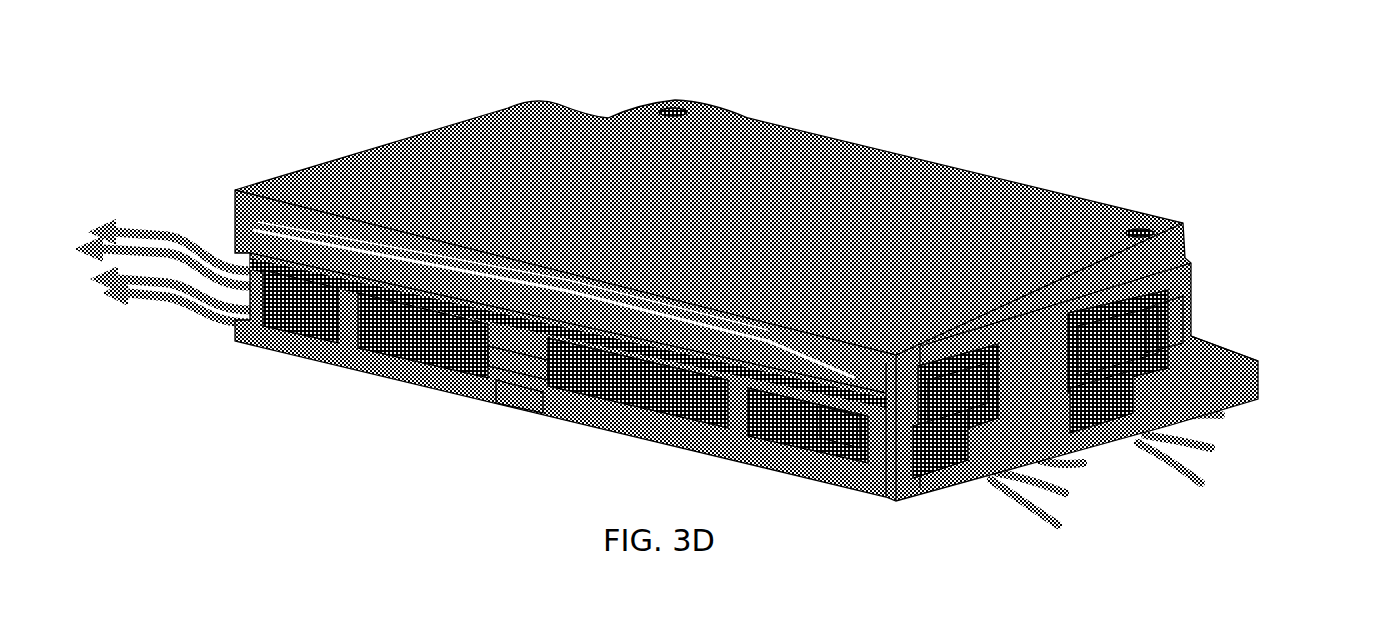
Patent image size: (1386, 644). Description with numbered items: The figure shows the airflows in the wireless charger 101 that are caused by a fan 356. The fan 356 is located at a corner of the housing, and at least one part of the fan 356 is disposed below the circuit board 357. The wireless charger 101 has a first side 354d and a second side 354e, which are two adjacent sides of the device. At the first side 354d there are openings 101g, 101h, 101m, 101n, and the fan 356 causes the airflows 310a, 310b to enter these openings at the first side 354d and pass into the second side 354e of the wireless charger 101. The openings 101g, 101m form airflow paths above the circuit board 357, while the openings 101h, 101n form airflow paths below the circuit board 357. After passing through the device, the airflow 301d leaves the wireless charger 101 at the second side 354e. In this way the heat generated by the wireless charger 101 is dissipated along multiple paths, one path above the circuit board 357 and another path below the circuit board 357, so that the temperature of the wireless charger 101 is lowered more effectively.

The wireless charger 101 is at (876, 207).
The opening 101g is at (1070, 323).
The opening 101h is at (1077, 397).
The opening 101m is at (940, 363).
The opening 101n is at (920, 433).
The airflow 301d is at (162, 277).
The airflow 310a is at (1058, 492).
The airflow 310b is at (1205, 449).
The first side 354d is at (1150, 313).
The second side 354e is at (510, 387).
The fan 356 is at (505, 353).
The circuit board 357 is at (830, 415).